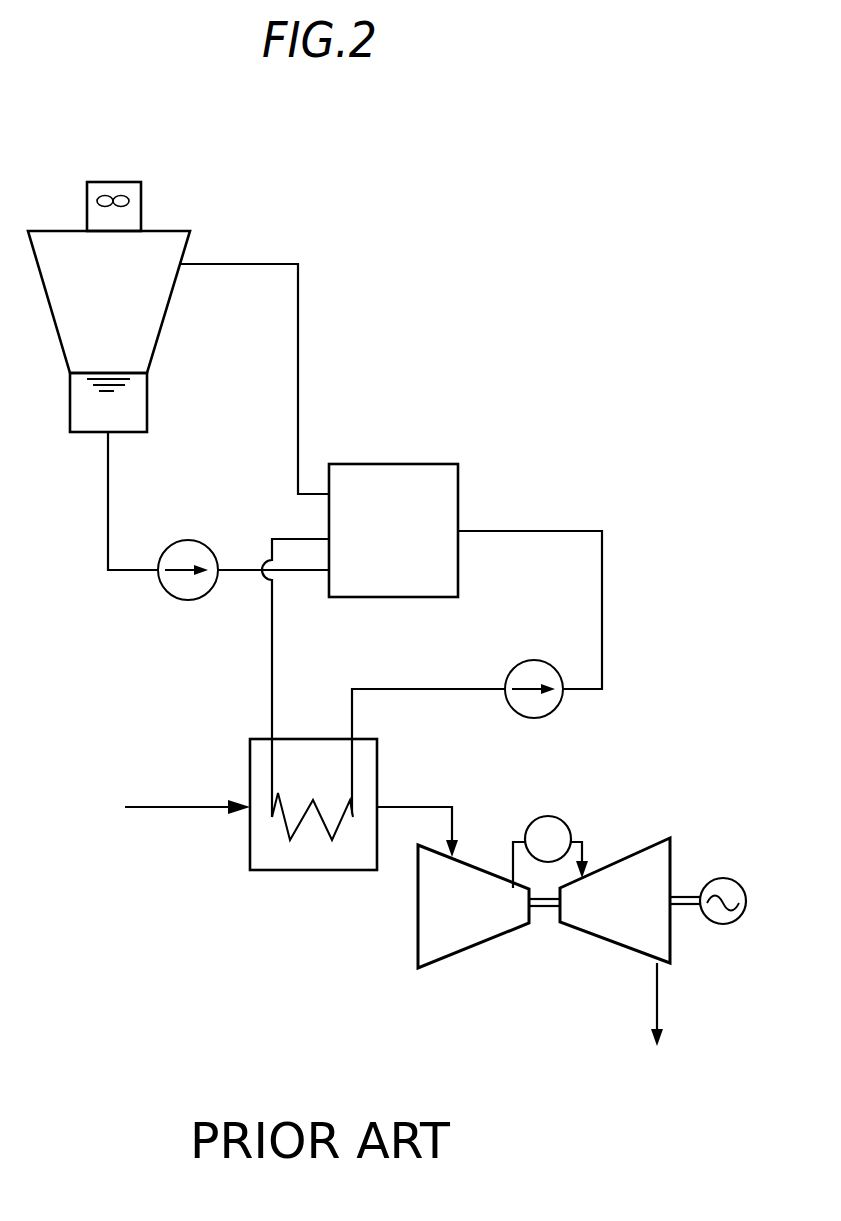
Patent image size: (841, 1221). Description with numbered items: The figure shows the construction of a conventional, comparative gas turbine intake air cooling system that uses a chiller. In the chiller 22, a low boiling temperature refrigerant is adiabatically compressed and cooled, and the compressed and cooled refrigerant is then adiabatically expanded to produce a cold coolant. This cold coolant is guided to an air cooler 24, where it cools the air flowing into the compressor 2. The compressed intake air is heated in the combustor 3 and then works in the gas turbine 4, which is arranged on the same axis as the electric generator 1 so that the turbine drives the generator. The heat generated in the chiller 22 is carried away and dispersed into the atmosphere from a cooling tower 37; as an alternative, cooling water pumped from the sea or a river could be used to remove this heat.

The electric generator 1 is at (714, 880).
The compressor 2 is at (418, 952).
The combustor 3 is at (558, 817).
The gas turbine 4 is at (637, 853).
The chiller 22 is at (427, 464).
The air cooler 24 is at (250, 765).
The cooling tower 37 is at (172, 231).